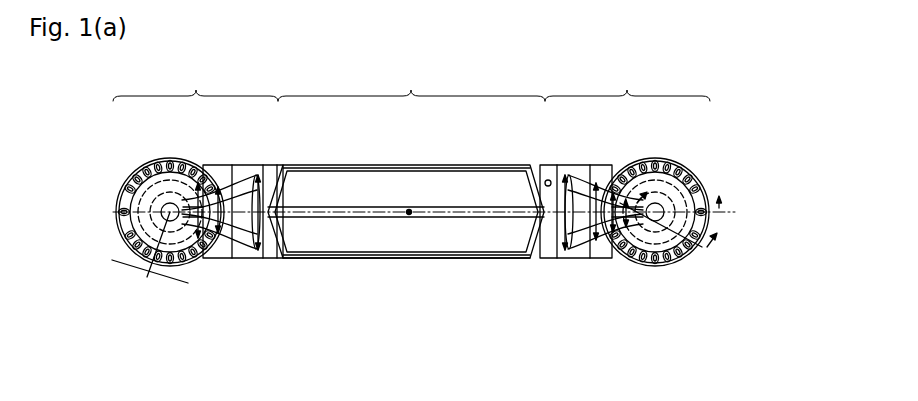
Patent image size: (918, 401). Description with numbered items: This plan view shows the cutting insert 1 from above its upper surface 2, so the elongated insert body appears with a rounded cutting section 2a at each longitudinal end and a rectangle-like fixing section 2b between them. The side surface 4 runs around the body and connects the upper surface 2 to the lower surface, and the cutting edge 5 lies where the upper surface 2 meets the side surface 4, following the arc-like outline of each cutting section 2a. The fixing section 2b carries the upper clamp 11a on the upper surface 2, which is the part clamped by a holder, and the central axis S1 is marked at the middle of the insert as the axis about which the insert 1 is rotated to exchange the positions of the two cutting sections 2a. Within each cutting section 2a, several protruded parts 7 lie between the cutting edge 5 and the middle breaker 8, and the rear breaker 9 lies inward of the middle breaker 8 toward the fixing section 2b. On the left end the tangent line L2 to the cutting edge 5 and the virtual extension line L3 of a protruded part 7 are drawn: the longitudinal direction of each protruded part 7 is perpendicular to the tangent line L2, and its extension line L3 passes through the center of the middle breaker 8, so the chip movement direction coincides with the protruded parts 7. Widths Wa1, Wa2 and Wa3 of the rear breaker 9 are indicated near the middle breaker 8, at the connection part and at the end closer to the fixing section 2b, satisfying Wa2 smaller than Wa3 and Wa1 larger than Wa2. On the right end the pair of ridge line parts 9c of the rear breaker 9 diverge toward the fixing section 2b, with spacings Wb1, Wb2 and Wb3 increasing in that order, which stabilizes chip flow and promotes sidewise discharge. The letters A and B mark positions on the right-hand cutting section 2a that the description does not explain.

The insert 1 is at (707, 170).
The upper surface 2 is at (506, 240).
The cutting section 2a is at (411, 85).
The fixing section 2b is at (411, 85).
The side surface 4 is at (472, 259).
The cutting edge 5 is at (113, 226).
The protruded parts 7 is at (113, 210).
The middle breaker 8 is at (122, 188).
The rear breaker 9 is at (142, 170).
The ridge line parts 9c is at (596, 182).
The upper clamp 11a is at (360, 233).
The central axis S1 is at (409, 214).
The tangent line L2 is at (168, 280).
The virtual extension line L3 is at (140, 270).
The width of the rear breaker closer to the middle breaker Wa1 is at (199, 245).
The width of the rear breaker at the connection part Wa2 is at (218, 241).
The width of the rear breaker at the end closer to the fixing section Wa3 is at (258, 253).
The distance between the ridge line parts on the middle breaker side Wb1 is at (627, 229).
The distance between the ridge line parts at the connection part Wb2 is at (609, 242).
The distance between the ridge line parts at the end closer to the fixing section Wb3 is at (568, 252).
The direction A is at (672, 194).
The direction B is at (672, 212).